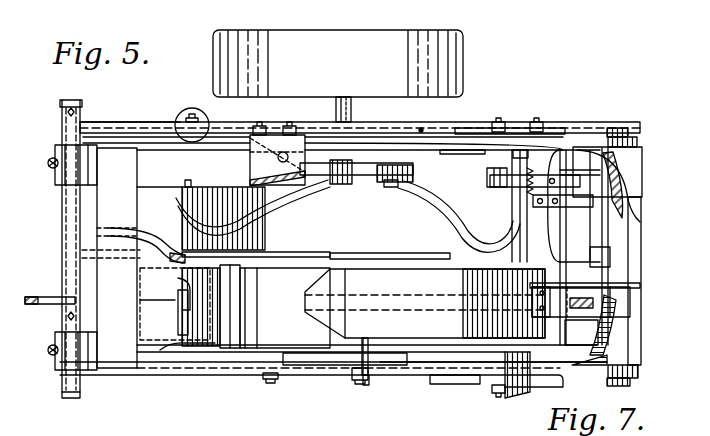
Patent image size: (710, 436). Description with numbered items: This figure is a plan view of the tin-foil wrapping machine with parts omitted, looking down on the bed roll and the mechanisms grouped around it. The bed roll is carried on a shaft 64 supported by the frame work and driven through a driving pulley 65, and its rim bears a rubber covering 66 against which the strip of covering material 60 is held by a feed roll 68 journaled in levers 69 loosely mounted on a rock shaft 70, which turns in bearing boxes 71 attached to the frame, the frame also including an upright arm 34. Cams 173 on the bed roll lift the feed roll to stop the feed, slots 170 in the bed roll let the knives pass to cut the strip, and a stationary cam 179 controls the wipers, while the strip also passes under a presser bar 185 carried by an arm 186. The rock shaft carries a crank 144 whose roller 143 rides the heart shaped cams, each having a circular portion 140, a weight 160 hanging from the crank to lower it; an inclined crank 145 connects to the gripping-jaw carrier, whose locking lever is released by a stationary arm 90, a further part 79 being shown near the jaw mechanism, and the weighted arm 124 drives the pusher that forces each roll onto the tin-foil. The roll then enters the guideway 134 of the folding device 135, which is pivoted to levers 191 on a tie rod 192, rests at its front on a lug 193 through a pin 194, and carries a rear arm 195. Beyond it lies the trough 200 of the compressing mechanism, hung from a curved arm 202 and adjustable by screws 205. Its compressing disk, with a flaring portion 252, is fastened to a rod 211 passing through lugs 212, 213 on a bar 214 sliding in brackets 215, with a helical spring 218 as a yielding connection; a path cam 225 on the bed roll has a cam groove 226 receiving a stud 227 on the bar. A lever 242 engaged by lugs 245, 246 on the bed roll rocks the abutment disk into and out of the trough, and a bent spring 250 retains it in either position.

The upright arm 34 is at (625, 186).
The covering material 60 is at (190, 312).
The shaft 64 is at (352, 116).
The driving pulley 65 is at (338, 63).
The rubber covering 66 is at (285, 308).
The feed roll 68 is at (236, 292).
The levers 69 is at (104, 250).
The rock shaft 70 is at (70, 395).
The bearing boxes 71 is at (55, 151).
The bracket 79 is at (277, 154).
The stationary arm 90 is at (272, 382).
The weighted arm 124 is at (152, 242).
The guideway 134 is at (408, 304).
The folding device 135 is at (425, 303).
The circular portion 140 is at (378, 167).
The roller 143 is at (367, 184).
The crank 144 is at (143, 127).
The inclined crank 145 is at (47, 297).
The weight 160 is at (211, 114).
The slots 170 is at (432, 358).
The cams 173 is at (290, 253).
The stationary cam 179 is at (180, 343).
The presser bar 185 is at (175, 304).
The arm 186 is at (147, 302).
The levers 191 is at (575, 350).
The tie rod 192 is at (610, 240).
The lug 193 is at (368, 380).
The pin 194 is at (368, 350).
The arm 195 is at (620, 298).
The trough 200 is at (530, 399).
The curved arm 202 is at (557, 134).
The screws 205 is at (500, 122).
The rod 211 is at (574, 247).
The lug 212 is at (585, 276).
The lug 213 is at (543, 162).
The bar 214 is at (464, 143).
The brackets 215 is at (621, 184).
The helical spring 218 is at (556, 178).
The path cam 225 is at (372, 258).
The cam groove 226 is at (188, 212).
The stud 227 is at (545, 210).
The lever 242 is at (486, 168).
The lug 245 is at (333, 186).
The lug 246 is at (191, 180).
The bent spring 250 is at (621, 221).
The flaring portion 252 is at (598, 277).